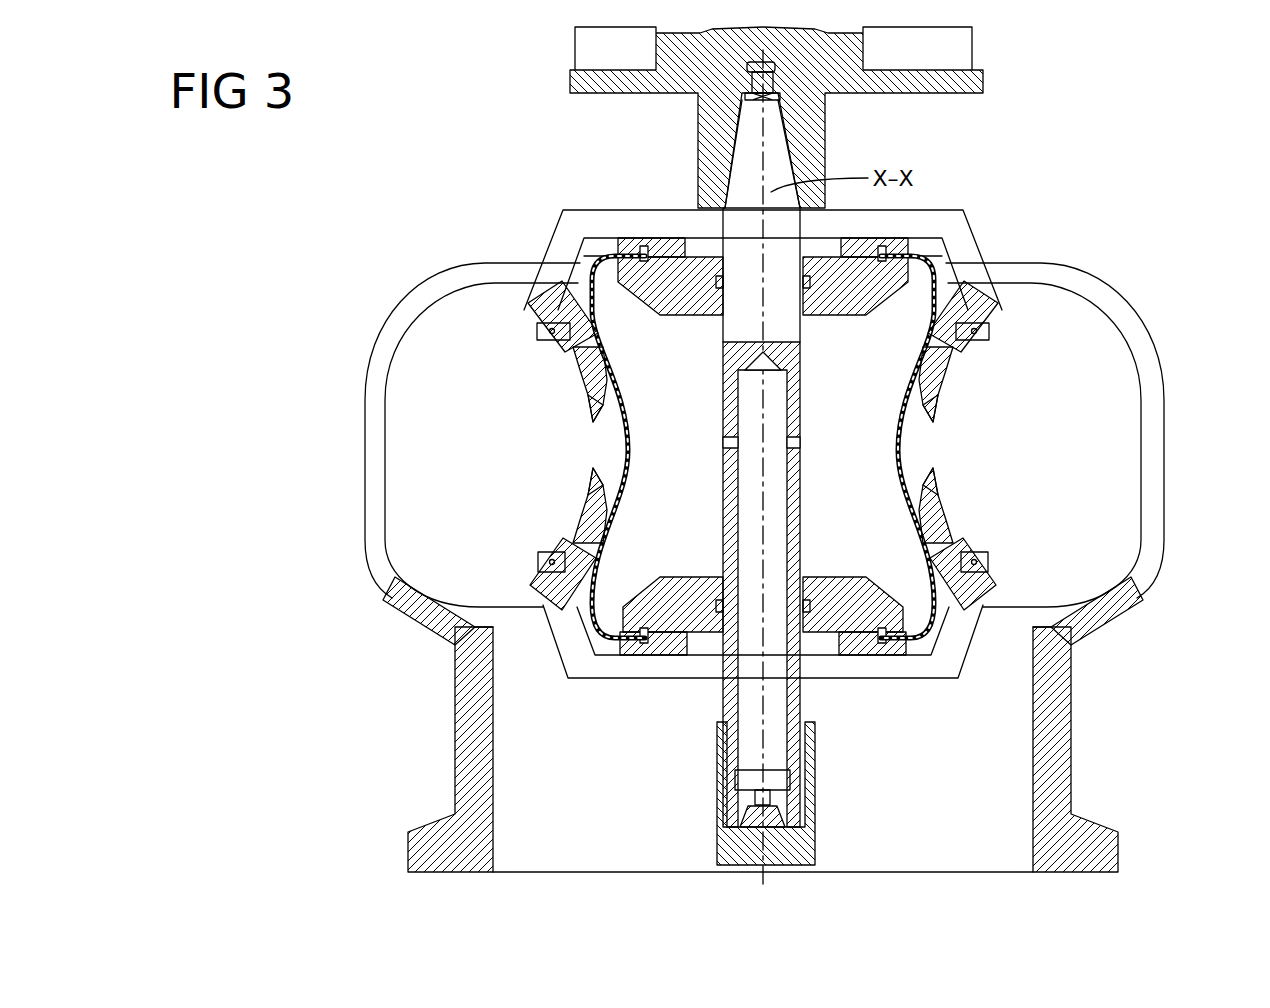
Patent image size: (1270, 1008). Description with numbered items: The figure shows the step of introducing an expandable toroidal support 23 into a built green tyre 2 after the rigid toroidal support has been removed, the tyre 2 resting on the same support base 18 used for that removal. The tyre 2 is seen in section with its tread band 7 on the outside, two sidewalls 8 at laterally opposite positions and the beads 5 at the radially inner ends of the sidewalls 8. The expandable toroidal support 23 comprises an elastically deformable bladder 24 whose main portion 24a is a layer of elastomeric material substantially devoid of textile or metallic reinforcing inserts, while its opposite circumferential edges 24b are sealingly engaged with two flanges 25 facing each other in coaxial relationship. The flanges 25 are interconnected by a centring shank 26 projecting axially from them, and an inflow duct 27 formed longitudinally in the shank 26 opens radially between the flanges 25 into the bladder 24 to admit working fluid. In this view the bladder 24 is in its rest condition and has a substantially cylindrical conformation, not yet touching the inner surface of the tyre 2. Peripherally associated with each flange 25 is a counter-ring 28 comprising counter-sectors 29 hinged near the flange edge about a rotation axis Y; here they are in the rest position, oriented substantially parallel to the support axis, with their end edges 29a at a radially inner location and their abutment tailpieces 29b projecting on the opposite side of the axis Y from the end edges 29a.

The tyre 2 is at (699, 405).
The beads 5 is at (497, 266).
The tread band 7 is at (364, 440).
The sidewalls 8 is at (383, 314).
The support base 18 is at (1069, 738).
The expandable toroidal support 23 is at (990, 670).
The bladder 24 is at (940, 263).
The main portion 24a is at (632, 440).
The circumferential edges 24b is at (640, 254).
The flanges 25 is at (662, 256).
The shank 26 is at (775, 154).
The inflow duct 27 is at (777, 745).
The counter-ring 28 is at (761, 454).
The counter-sectors 29 is at (596, 381).
The end edges 29a is at (590, 419).
The abutment tailpiece 29b is at (533, 300).
The rotation axis Y is at (562, 352).